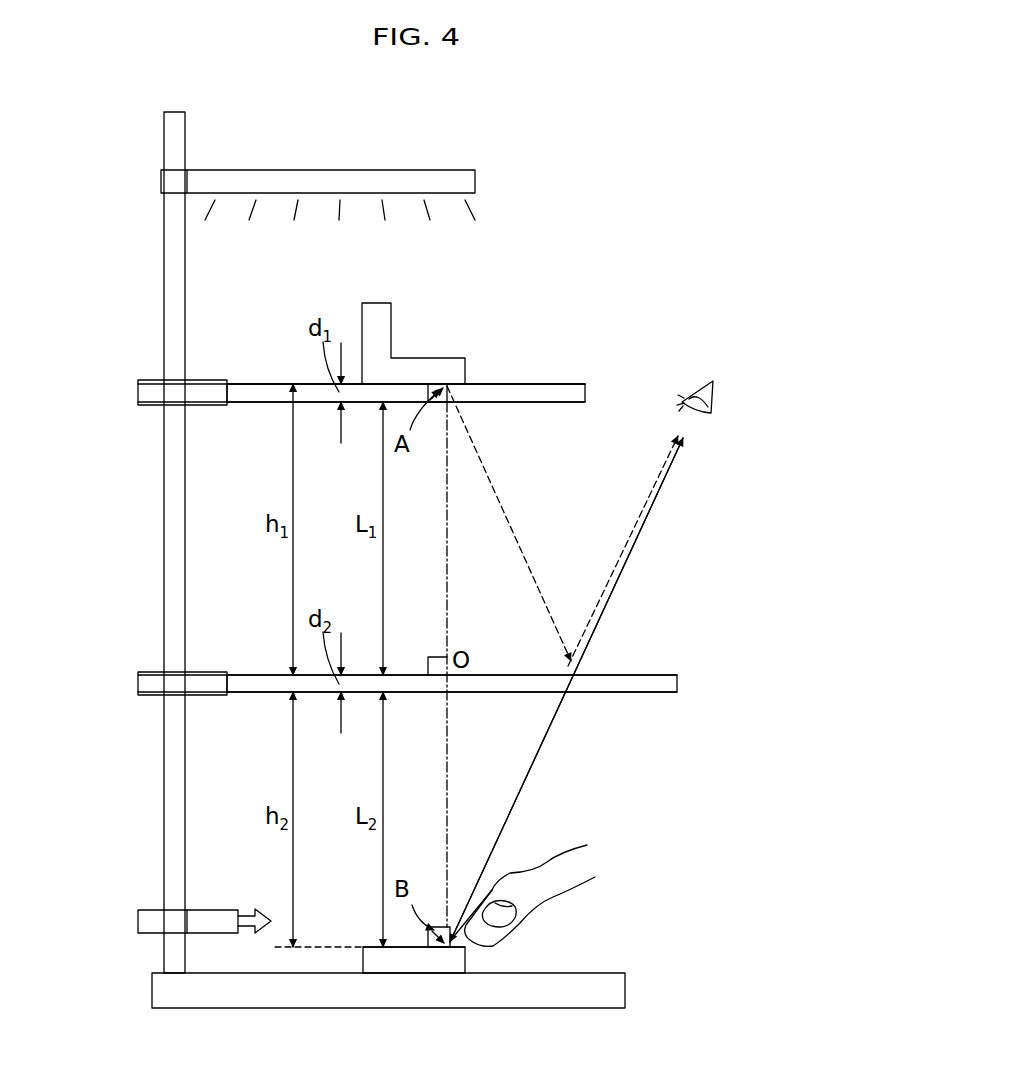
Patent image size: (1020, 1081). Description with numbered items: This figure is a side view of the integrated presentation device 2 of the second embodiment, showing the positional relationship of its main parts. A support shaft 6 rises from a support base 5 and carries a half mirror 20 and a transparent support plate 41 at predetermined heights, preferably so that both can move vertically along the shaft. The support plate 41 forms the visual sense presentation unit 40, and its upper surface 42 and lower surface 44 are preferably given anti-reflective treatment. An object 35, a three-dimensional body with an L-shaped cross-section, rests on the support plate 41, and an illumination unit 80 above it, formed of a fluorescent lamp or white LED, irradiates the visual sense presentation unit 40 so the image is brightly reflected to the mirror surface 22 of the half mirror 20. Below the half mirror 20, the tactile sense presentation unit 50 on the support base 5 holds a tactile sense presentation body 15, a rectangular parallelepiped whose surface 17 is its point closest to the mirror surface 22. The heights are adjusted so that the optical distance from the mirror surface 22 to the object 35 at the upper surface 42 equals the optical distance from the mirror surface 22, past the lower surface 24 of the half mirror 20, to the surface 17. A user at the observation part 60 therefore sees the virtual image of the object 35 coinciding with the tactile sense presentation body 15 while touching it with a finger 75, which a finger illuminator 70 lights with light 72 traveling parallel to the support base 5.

The integrated presentation device 2 is at (112, 328).
The support base 5 is at (620, 993).
The support shaft 6 is at (175, 160).
The tactile sense presentation body 15 is at (455, 957).
The surface of the tactile sense presentation body 17 is at (370, 944).
The half mirror 20 is at (680, 683).
The mirror surface 22 is at (630, 673).
The lower surface of the half mirror 24 is at (630, 695).
The object 35 is at (440, 357).
The visual sense presentation unit 40 is at (528, 335).
The support plate 41 is at (245, 403).
The upper surface of the support plate 42 is at (573, 382).
The lower surface of the support plate 44 is at (573, 404).
The tactile sense presentation unit 50 is at (344, 878).
The observation part 60 is at (734, 396).
The finger illuminator 70 is at (205, 910).
The light 72 is at (248, 915).
The finger 75 is at (493, 946).
The illumination unit 80 is at (416, 170).